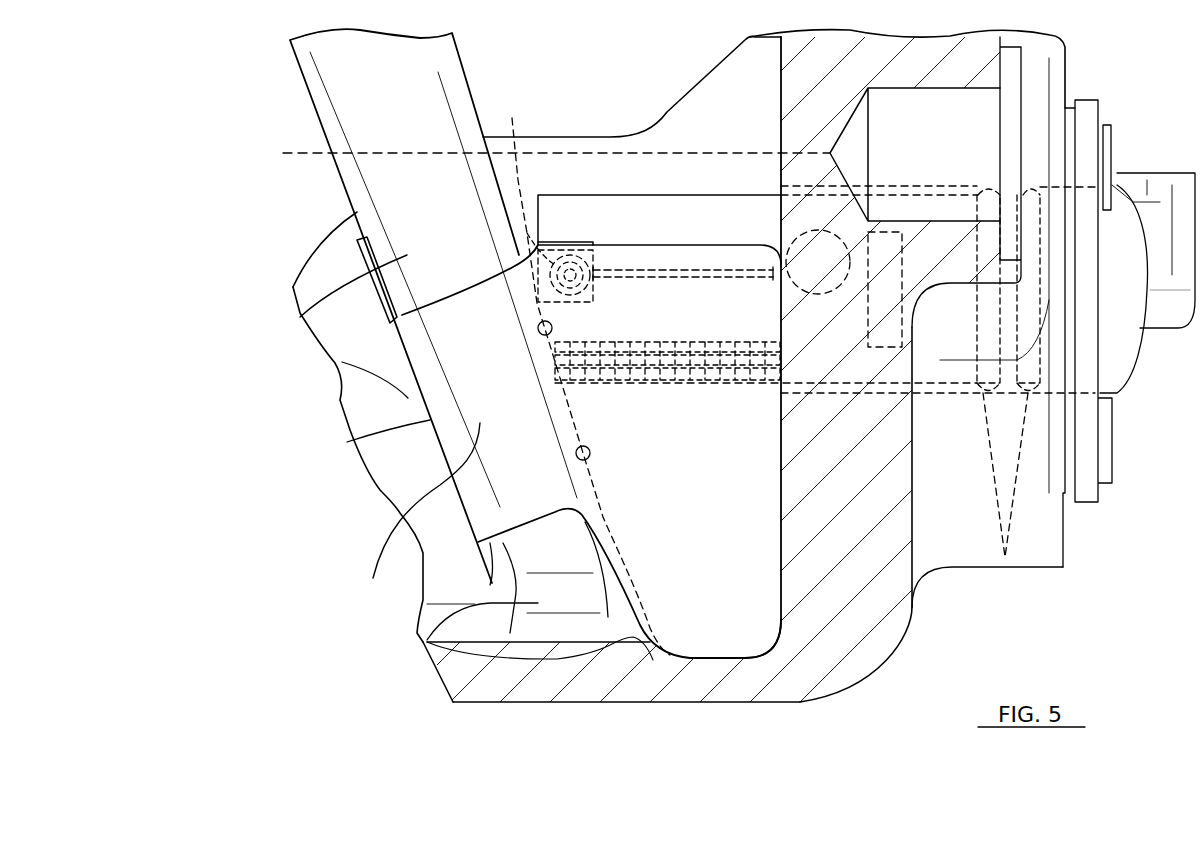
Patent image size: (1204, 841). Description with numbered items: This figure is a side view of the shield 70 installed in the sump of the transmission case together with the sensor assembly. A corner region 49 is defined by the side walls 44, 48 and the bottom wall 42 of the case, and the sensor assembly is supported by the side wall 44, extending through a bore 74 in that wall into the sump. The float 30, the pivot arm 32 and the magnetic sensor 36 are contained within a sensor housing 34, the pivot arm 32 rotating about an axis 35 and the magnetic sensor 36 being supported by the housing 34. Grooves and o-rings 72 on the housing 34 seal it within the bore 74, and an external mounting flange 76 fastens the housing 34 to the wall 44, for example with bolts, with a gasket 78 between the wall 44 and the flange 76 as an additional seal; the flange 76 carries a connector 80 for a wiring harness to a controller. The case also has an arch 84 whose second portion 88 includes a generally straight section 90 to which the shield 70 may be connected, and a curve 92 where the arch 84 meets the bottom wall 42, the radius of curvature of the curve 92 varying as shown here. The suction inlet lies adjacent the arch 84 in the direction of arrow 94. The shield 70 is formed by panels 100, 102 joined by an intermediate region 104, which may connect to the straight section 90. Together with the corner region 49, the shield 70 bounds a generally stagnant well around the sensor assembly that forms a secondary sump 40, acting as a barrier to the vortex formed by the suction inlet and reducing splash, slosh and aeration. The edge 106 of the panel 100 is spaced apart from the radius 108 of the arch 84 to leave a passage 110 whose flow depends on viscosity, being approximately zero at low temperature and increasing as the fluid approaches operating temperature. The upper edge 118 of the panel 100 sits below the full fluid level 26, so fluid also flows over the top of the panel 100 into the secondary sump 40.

The full fluid level 26 is at (385, 153).
The float 30 is at (812, 235).
The pivot arm 32 is at (642, 270).
The sensor housing 34 is at (630, 220).
The axis 35 is at (584, 372).
The magnetic sensor 36 is at (885, 340).
The secondary sump 40 is at (775, 685).
The corner region 49 is at (765, 660).
The bottom wall 42 is at (537, 687).
The side wall 44 is at (855, 65).
The side wall 48 is at (750, 175).
The shield 70 is at (696, 502).
The o-rings 72 is at (1005, 557).
The bore 74 is at (917, 187).
The mounting flange 76 is at (1098, 502).
The gasket 78 is at (1063, 493).
The connector 80 is at (1165, 173).
The arch 84 is at (302, 305).
The second portion 88 is at (302, 305).
The straight section 90 is at (300, 317).
The curve 92 is at (423, 642).
The arrow 94 is at (262, 527).
The panel 100 is at (728, 590).
The panel 102 is at (347, 442).
The intermediate region 104 is at (415, 420).
The edge 106 is at (800, 702).
The radius 108 is at (597, 653).
The passage 110 is at (650, 646).
The upper edge 118 is at (610, 243).